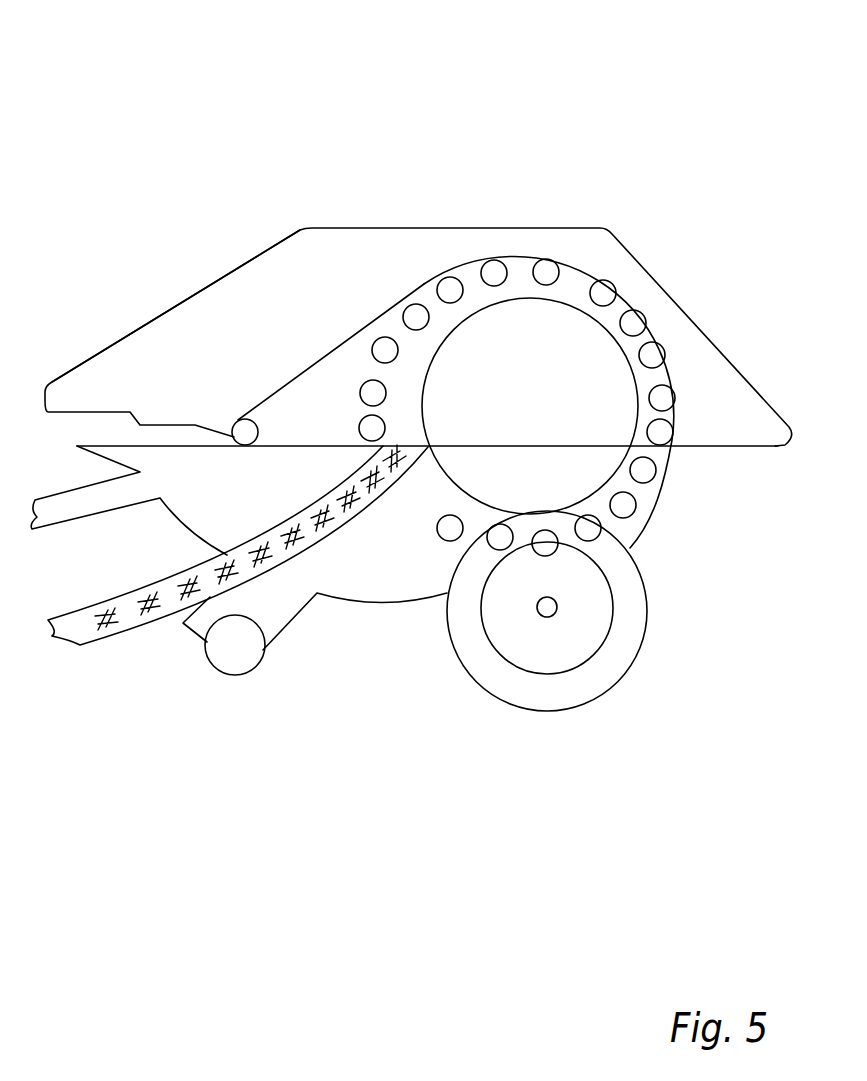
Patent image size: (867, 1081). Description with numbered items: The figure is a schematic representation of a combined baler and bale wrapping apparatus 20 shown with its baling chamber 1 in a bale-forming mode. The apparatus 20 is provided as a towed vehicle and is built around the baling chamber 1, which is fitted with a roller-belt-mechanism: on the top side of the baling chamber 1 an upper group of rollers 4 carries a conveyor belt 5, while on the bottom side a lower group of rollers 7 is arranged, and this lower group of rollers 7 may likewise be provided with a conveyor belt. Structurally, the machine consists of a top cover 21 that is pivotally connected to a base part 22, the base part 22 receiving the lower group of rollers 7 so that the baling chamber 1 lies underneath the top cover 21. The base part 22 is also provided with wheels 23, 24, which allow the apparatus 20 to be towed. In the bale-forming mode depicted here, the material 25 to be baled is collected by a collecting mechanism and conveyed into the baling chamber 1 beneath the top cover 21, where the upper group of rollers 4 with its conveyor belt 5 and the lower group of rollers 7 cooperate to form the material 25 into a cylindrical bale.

The combined baler and bale wrapping apparatus 20 is at (528, 138).
The baling chamber 1 is at (350, 248).
The top cover 21 is at (230, 280).
The upper group of rollers 4 is at (546, 270).
The conveyor belt 5 is at (632, 293).
The lower group of rollers 7 is at (625, 505).
The base part 22 is at (373, 587).
The wheel 23 is at (232, 662).
The wheel 24 is at (605, 662).
The material 25 is at (108, 620).